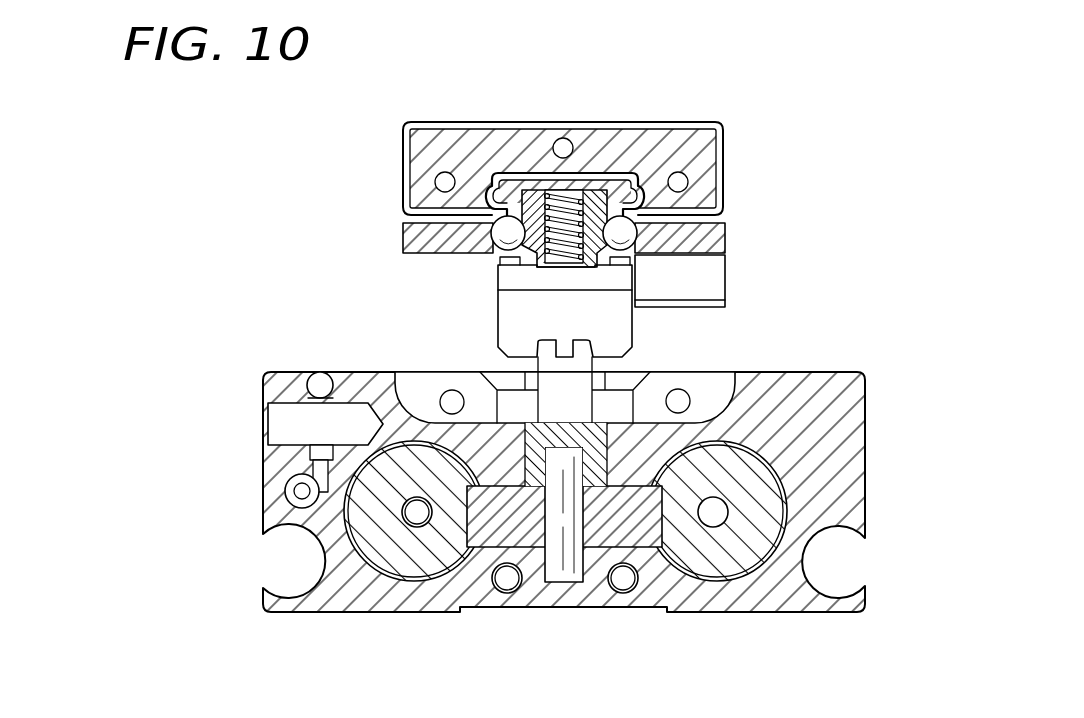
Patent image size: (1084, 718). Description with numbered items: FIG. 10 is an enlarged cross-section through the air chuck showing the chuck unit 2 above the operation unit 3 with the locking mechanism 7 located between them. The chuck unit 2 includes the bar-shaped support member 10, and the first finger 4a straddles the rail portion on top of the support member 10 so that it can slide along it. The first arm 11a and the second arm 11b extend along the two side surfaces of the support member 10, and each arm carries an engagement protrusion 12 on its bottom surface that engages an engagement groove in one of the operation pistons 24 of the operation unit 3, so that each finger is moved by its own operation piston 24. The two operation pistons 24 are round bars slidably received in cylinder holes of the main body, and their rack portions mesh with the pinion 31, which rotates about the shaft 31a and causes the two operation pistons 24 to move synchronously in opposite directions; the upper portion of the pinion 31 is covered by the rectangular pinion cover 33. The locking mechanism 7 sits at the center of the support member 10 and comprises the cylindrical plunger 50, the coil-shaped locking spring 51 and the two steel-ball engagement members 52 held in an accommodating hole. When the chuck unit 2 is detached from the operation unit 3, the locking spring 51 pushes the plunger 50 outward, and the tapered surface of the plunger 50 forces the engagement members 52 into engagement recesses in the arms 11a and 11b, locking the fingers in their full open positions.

The chuck unit 2 is at (570, 191).
The operation unit 3 is at (571, 531).
The first finger 4a is at (456, 140).
The locking mechanism 7 is at (585, 171).
The support member 10 is at (528, 184).
The plunger 50 is at (596, 212).
The locking spring 51 is at (565, 230).
The engagement members 52 is at (500, 247).
The first arm 11a is at (705, 234).
The second arm 11b is at (423, 233).
The engagement protrusion 12 is at (678, 303).
The operation piston 24 is at (400, 537).
The pinion 31 is at (513, 523).
The shaft 31a is at (558, 563).
The pinion cover 33 is at (595, 472).